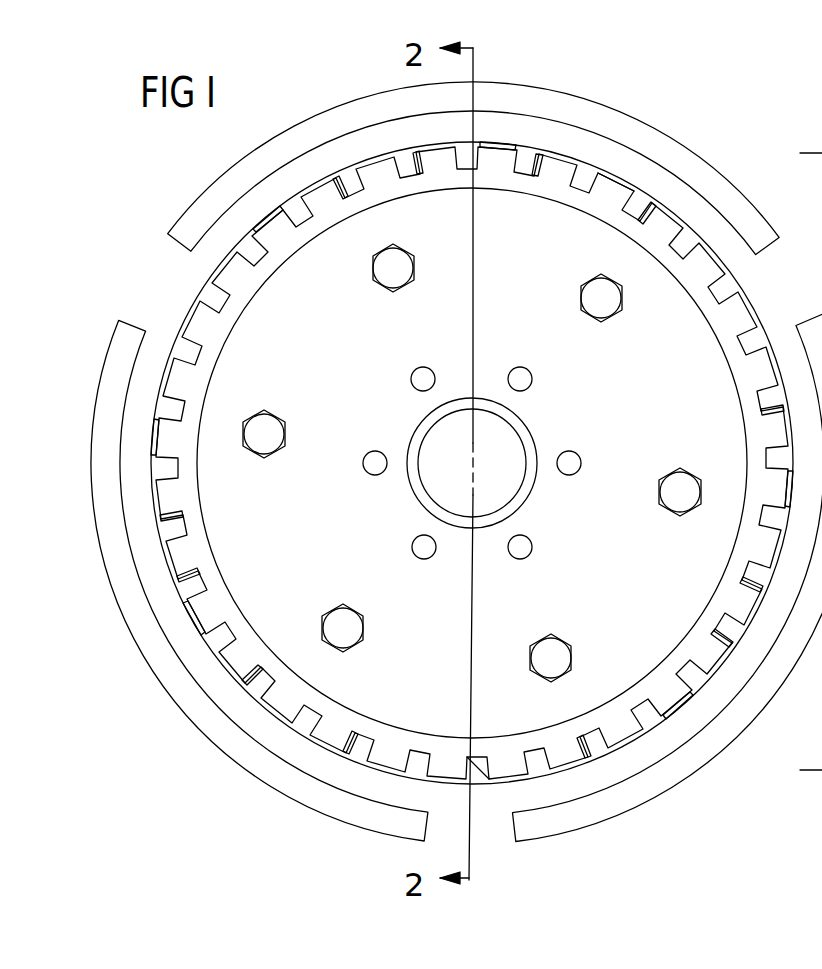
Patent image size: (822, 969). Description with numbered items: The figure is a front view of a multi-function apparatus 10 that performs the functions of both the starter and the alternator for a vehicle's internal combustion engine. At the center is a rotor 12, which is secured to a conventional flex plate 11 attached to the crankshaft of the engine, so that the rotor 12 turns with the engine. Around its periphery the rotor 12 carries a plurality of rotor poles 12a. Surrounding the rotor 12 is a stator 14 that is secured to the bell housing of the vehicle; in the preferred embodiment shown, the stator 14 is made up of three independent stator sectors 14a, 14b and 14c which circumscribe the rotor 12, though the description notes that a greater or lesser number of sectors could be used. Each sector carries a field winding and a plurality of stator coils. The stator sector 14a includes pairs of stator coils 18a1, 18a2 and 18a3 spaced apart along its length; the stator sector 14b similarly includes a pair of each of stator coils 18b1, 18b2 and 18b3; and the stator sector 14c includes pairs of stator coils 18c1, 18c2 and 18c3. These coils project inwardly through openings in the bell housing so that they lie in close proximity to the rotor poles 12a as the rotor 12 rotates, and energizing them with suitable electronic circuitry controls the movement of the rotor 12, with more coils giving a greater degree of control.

The multi-function apparatus 10 is at (310, 100).
The flex plate 11 is at (340, 362).
The rotor 12 is at (180, 310).
The rotor poles 12a is at (614, 196).
The stator 14 is at (166, 226).
The stator sector 14a is at (612, 100).
The stator sector 14b is at (602, 822).
The stator sector 14c is at (259, 580).
The stator coil 18a1 is at (412, 160).
The stator coil 18a2 is at (263, 217).
The stator coil 18a3 is at (337, 178).
The stator coil 18b1 is at (788, 412).
The stator coil 18b2 is at (788, 490).
The stator coil 18b3 is at (775, 585).
The stator coil 18c1 is at (157, 503).
The stator coil 18c2 is at (157, 430).
The stator coil 18c3 is at (178, 562).